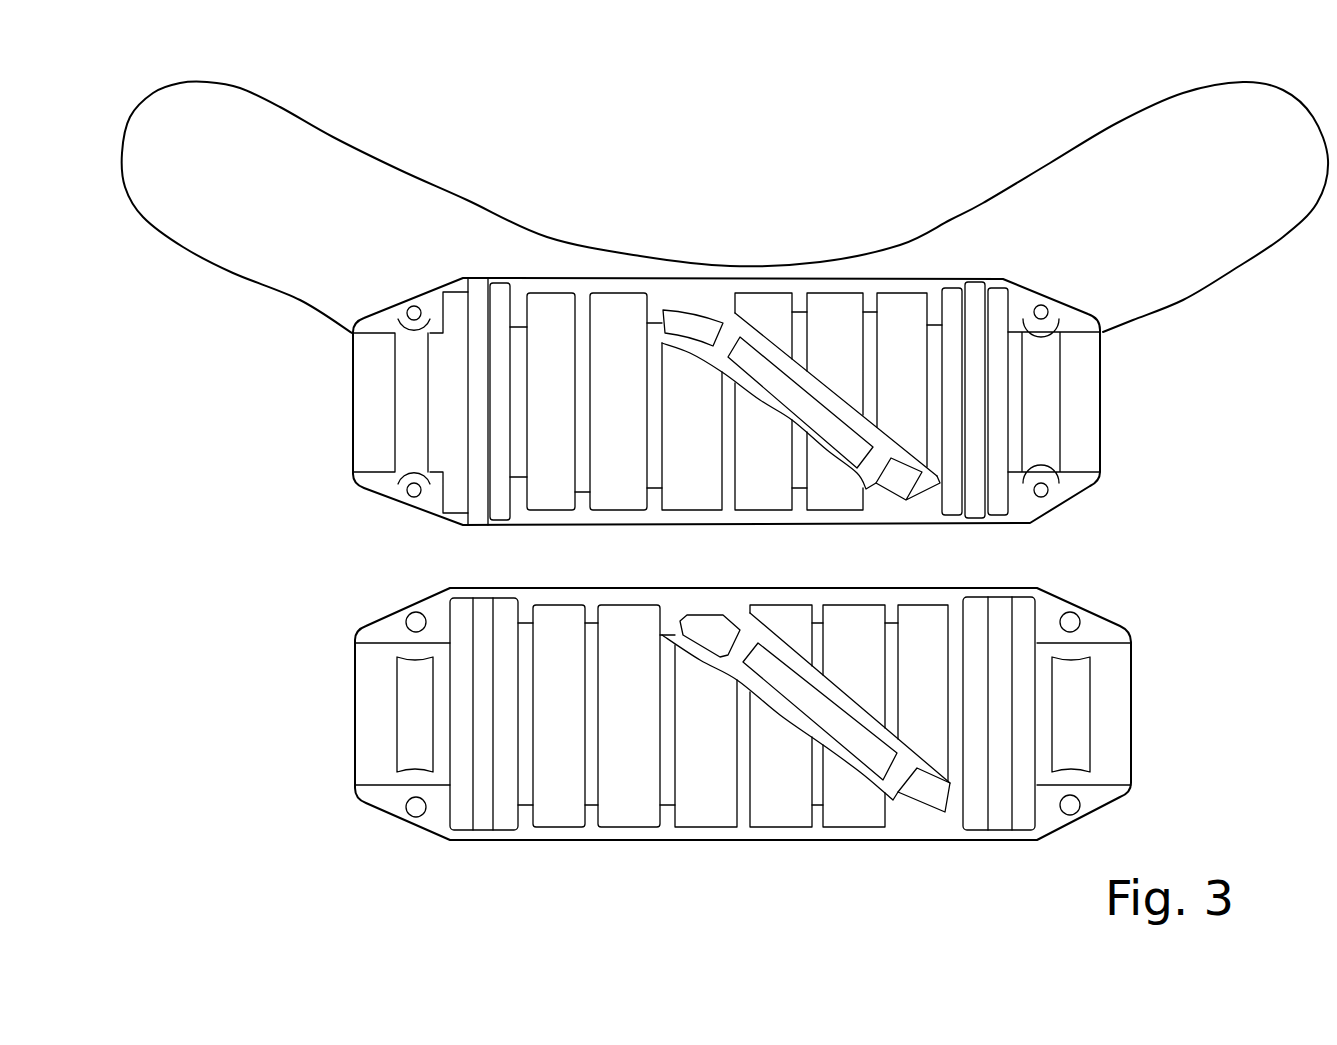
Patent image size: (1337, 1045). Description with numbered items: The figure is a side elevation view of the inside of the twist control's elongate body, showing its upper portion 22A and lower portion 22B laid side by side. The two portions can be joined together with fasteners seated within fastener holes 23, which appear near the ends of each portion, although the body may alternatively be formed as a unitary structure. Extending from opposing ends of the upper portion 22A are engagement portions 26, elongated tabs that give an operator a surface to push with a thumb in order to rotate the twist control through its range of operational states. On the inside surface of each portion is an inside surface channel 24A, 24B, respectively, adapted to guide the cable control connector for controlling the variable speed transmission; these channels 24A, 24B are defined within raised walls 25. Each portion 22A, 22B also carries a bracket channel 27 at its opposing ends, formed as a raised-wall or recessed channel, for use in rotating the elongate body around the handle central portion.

The upper portion 22A is at (1082, 413).
The lower portion 22B is at (1110, 697).
The fastener holes 23 is at (408, 487).
The inside surface channel 24A is at (770, 372).
The inside surface channel 24B is at (802, 695).
The raised walls 25 is at (815, 377).
The engagement portions 26 is at (400, 190).
The bracket channel 27 is at (477, 503).